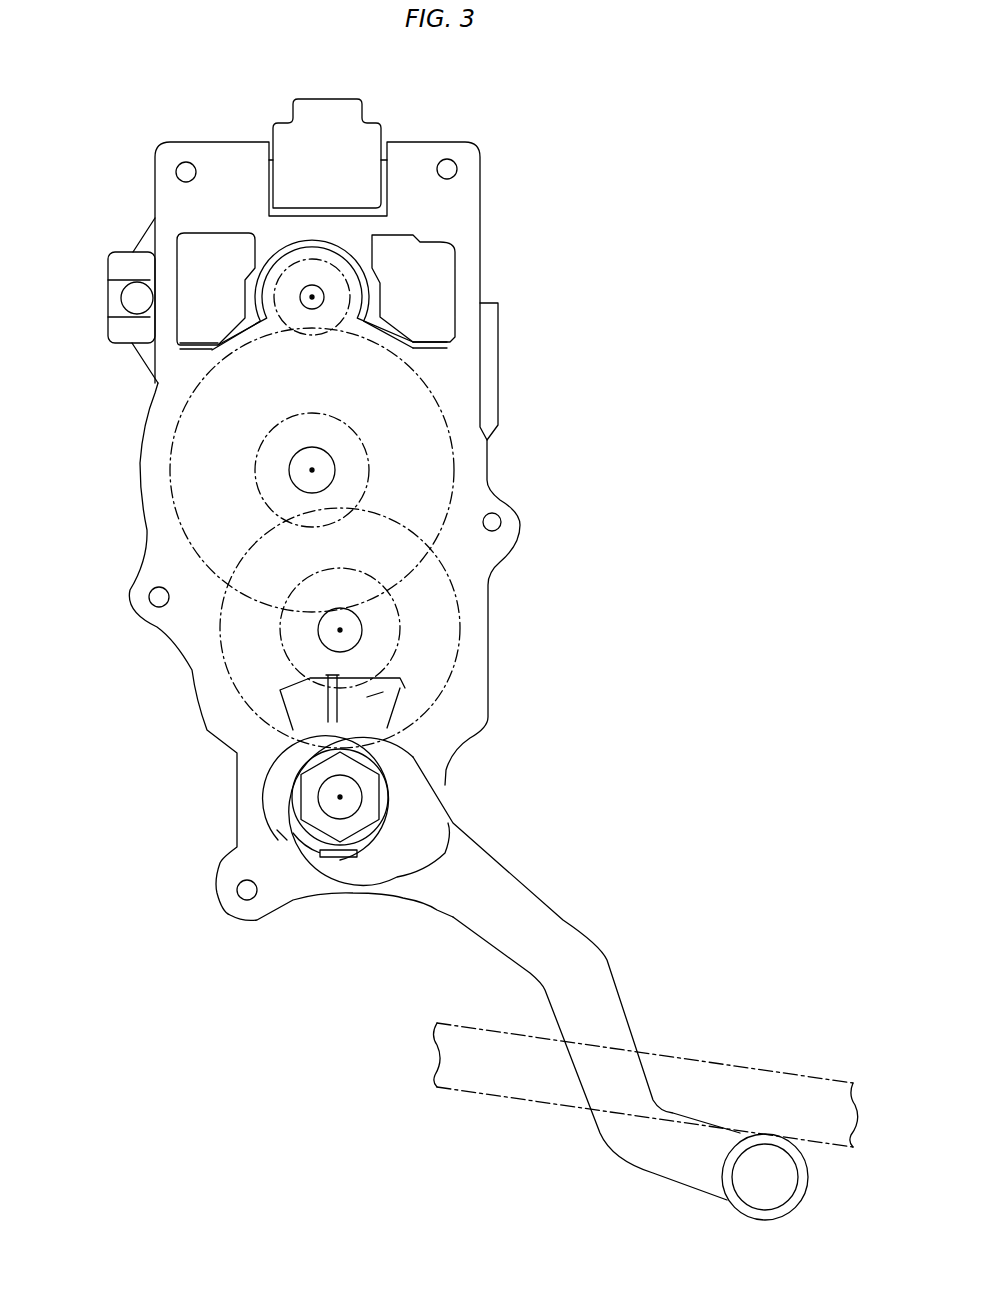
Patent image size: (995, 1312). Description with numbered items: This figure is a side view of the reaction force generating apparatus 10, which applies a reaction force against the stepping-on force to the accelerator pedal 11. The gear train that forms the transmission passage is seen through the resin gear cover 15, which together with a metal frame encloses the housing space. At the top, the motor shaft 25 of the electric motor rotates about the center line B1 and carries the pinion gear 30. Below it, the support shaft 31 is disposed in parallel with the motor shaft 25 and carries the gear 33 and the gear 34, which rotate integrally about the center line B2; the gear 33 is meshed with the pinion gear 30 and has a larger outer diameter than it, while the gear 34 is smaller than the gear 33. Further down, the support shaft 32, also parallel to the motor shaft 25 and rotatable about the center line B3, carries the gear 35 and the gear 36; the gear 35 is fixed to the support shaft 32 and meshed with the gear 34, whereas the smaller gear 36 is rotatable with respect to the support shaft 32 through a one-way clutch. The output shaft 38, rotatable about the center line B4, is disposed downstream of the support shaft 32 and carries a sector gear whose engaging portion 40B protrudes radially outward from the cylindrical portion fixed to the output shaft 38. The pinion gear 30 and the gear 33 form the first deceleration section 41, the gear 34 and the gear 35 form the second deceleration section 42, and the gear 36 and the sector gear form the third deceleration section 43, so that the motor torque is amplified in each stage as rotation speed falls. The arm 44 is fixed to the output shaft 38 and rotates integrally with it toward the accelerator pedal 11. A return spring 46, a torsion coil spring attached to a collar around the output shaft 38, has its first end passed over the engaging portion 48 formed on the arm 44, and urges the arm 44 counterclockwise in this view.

The reaction force generating apparatus 10 is at (612, 168).
The accelerator pedal 11 is at (790, 1055).
The gear cover 15 is at (458, 547).
The motor shaft 25 is at (323, 297).
The pinion gear 30 is at (372, 270).
The support shaft 31 is at (323, 482).
The support shaft 32 is at (360, 636).
The gear 33 is at (418, 452).
The gear 34 is at (335, 424).
The gear 35 is at (440, 612).
The gear 36 is at (345, 570).
The output shaft 38 is at (362, 797).
The engaging portion 40B is at (405, 688).
The first deceleration section 41 is at (176, 363).
The second deceleration section 42 is at (246, 507).
The third deceleration section 43 is at (266, 667).
The arm 44 is at (582, 953).
The return spring 46 is at (313, 705).
The engaging portion 48 is at (333, 863).
The center line B1 is at (312, 297).
The center line B2 is at (312, 470).
The center line B3 is at (340, 630).
The center line B4 is at (340, 797).